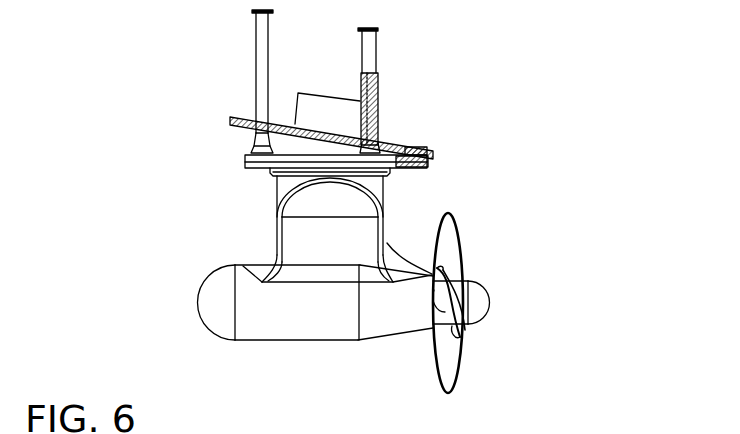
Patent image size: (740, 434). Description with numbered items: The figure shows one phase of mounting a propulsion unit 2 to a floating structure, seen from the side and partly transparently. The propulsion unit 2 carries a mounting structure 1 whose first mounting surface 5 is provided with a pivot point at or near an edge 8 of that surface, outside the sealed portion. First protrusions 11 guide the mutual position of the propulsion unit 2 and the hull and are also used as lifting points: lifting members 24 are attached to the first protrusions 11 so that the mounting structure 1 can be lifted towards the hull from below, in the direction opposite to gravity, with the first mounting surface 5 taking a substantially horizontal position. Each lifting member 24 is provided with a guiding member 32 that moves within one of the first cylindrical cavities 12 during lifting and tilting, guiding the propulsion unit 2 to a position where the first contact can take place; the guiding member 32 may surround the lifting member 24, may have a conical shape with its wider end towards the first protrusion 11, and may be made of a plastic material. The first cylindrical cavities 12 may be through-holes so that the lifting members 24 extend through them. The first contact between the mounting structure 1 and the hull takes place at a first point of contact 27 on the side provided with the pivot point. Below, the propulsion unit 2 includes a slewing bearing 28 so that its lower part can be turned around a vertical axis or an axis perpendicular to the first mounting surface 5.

The mounting structure 1 is at (398, 170).
The propulsion unit 2 is at (315, 320).
The first mounting surface 5 is at (284, 146).
The edge 8 is at (446, 158).
The first protrusions 11 is at (398, 152).
The first cylindrical cavities 12 is at (361, 103).
The lifting member 24 is at (363, 137).
The first point of contact 27 is at (418, 142).
The slewing bearing 28 is at (392, 176).
The guiding member 32 is at (377, 138).